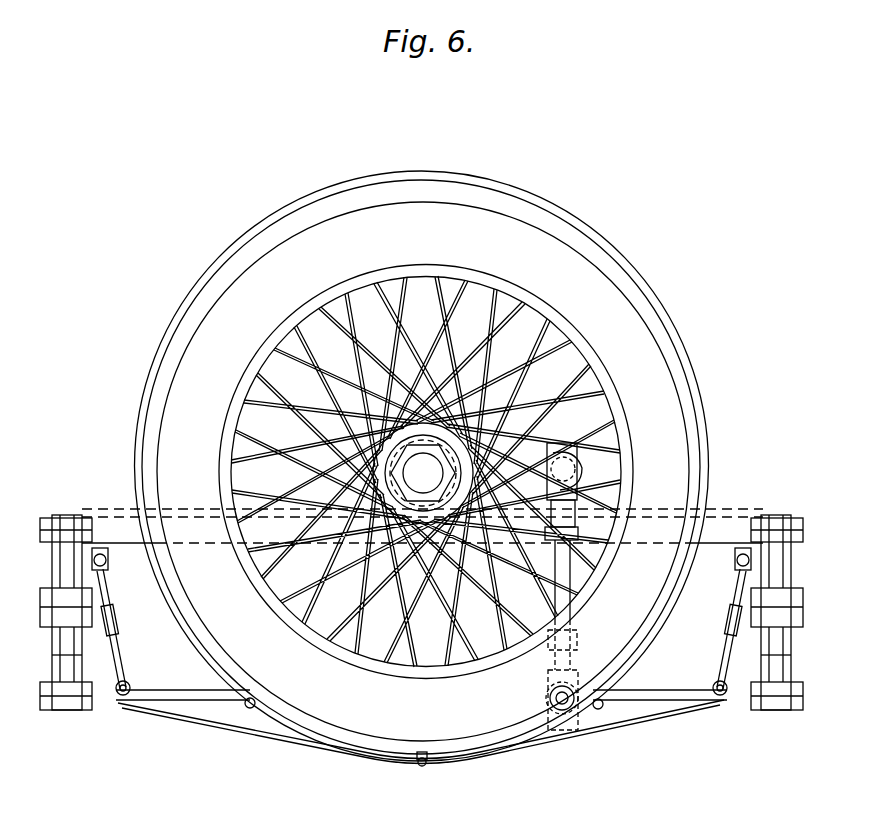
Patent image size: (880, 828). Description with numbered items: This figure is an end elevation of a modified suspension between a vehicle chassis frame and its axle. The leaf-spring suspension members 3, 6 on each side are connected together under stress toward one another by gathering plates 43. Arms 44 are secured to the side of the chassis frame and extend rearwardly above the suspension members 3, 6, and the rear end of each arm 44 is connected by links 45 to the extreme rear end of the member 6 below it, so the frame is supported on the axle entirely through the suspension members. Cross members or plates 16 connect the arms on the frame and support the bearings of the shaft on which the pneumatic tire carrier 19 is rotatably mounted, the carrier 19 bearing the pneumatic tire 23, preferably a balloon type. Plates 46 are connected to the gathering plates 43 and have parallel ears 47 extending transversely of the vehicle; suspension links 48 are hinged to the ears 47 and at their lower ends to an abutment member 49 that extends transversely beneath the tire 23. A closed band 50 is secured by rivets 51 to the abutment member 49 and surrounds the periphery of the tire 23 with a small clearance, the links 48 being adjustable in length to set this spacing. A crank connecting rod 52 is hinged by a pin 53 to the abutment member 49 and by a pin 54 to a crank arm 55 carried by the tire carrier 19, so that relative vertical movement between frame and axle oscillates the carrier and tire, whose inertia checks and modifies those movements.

The suspension member 3 is at (60, 630).
The second suspension member 6 is at (70, 706).
The cross members or plates 16 is at (118, 513).
The pneumatic tire carrier 19 is at (604, 378).
The pneumatic tire 23 is at (660, 340).
The gathering plates 43 is at (62, 664).
The arms 44 is at (66, 518).
The links 45 is at (62, 556).
The plates 46 is at (58, 592).
The parallel ears 47 is at (110, 570).
The suspension links 48 is at (120, 628).
The abutment member 49 is at (240, 724).
The closed band 50 is at (700, 370).
The rivets 51 is at (423, 766).
The crank connecting rod 52 is at (580, 640).
The pin 53 is at (546, 704).
The pin 54 is at (598, 450).
The crank arm 55 is at (580, 490).